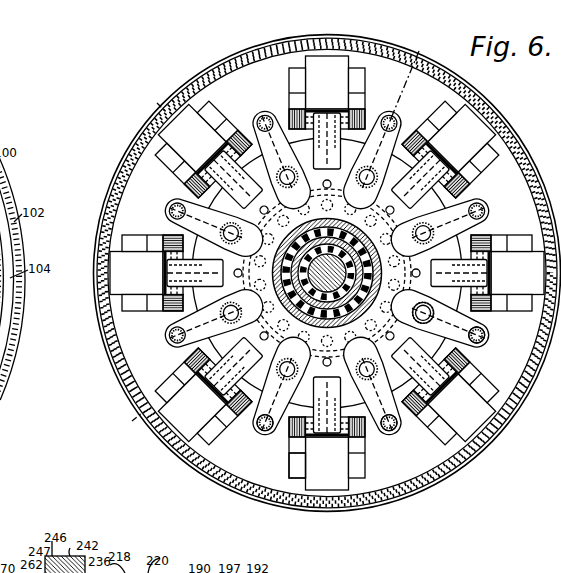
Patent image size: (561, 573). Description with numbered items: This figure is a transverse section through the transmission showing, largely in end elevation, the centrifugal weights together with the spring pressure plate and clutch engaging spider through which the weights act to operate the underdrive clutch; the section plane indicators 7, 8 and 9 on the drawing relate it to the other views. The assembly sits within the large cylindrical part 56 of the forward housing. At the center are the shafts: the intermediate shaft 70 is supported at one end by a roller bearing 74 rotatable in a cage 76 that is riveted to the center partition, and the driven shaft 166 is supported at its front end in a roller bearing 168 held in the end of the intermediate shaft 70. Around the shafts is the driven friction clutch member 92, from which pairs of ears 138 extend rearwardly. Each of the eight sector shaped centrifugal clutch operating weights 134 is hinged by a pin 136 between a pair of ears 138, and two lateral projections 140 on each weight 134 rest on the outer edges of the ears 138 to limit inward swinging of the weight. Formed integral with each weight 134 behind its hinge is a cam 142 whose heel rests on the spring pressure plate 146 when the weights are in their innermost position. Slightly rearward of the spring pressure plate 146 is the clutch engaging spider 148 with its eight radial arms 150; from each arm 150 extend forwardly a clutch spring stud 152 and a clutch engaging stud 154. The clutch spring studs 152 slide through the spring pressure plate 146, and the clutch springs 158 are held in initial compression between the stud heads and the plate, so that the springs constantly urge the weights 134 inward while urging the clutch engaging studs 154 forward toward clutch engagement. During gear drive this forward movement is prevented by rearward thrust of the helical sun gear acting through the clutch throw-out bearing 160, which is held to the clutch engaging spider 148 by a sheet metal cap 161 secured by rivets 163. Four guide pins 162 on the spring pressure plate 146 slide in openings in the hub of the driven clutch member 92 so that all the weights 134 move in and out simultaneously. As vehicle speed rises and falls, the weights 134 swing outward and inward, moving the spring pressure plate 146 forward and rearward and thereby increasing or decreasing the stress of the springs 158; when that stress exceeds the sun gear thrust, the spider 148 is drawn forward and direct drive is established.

The large cylindrical part 56 is at (327, 273).
The driven friction clutch member 92 is at (316, 272).
The section line 7 is at (407, 73).
The section line 8 is at (155, 101).
The section line 9 is at (130, 422).
The roller bearing 168 is at (327, 141).
The driven shaft 166 is at (373, 160).
The guide pin 162 is at (441, 160).
The clutch throw-out bearing 160 is at (214, 226).
The rivet 163 is at (195, 273).
The cage 76 is at (214, 319).
The intermediate shaft 70 is at (440, 226).
The sheet metal cap 161 is at (459, 273).
The roller bearing 74 is at (440, 319).
The clutch spring 158 is at (436, 312).
The spring pressure plate 146 is at (489, 344).
The cam 142 is at (280, 386).
The clutch engaging spider 148 is at (327, 405).
The clutch spring stud 152 is at (373, 386).
The radial arm 150 is at (405, 427).
The pin 136 is at (374, 447).
The clutch engaging stud 154 is at (253, 432).
The ear 138 is at (283, 447).
The lateral projection 140 is at (285, 465).
The centrifugal clutch operating weight 134 is at (350, 463).